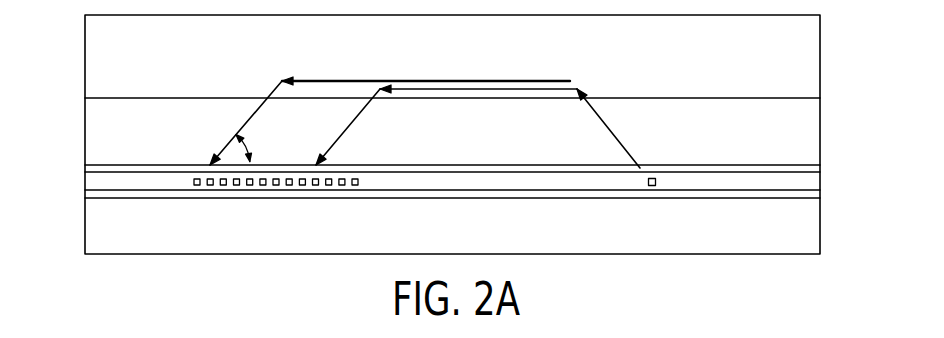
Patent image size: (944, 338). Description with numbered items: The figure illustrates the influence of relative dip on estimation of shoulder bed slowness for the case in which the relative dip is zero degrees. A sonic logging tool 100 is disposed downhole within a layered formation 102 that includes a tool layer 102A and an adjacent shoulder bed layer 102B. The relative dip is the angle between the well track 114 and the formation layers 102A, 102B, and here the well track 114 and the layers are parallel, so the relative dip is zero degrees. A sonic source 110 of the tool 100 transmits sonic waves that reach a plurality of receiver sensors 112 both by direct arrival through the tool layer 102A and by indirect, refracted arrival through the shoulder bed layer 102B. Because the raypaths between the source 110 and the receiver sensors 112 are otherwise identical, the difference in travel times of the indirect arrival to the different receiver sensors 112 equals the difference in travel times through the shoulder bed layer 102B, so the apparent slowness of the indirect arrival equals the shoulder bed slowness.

The sonic logging tool 100 is at (76, 179).
The layered formation 102 is at (78, 114).
The tool layer 102A is at (497, 146).
The shoulder bed layer 102B is at (497, 54).
The sonic source 110 is at (656, 182).
The receiver sensors 112 is at (239, 187).
The well track 114 is at (828, 180).